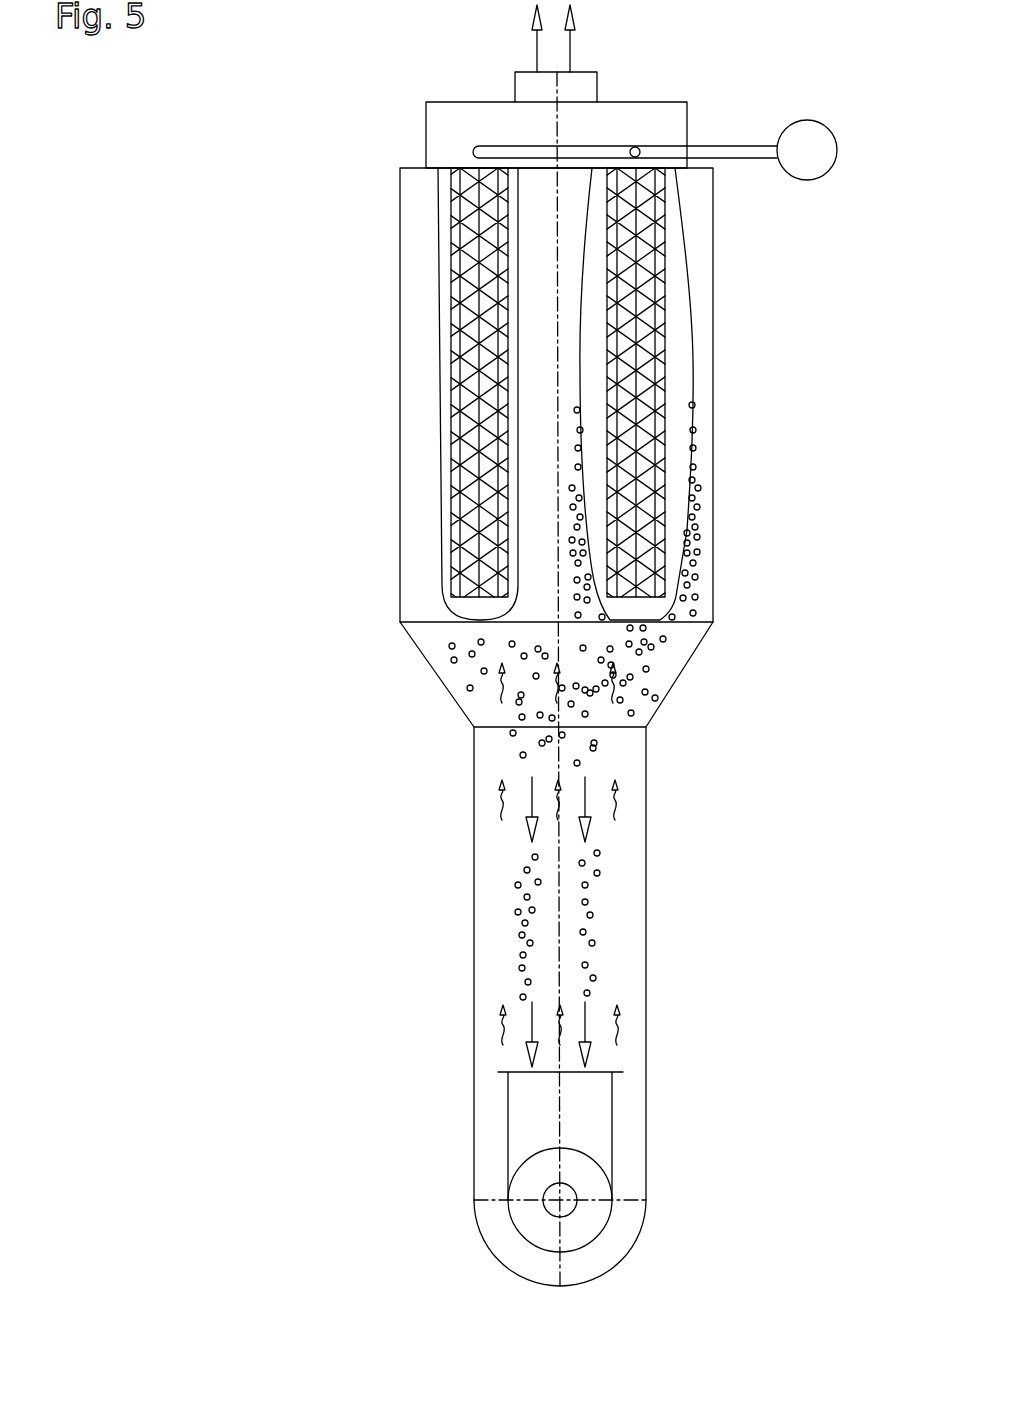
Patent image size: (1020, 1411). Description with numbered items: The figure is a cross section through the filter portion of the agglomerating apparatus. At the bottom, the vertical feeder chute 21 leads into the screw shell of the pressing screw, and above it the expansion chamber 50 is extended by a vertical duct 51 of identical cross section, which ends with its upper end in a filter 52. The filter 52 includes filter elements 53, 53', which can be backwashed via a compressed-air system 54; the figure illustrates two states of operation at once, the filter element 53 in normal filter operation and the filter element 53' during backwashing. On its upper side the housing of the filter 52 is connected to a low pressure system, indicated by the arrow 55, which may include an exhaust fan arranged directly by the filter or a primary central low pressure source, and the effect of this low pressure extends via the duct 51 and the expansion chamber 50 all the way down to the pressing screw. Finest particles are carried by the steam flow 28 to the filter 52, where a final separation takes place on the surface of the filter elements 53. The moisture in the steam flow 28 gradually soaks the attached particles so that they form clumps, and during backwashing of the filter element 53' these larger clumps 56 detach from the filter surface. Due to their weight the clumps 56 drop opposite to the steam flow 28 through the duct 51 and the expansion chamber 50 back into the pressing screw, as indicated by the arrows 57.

The arrow indicating low pressure system 55 is at (571, 52).
The compressed-air system 54 is at (807, 180).
The filter element 53 is at (410, 394).
The filter element 53' is at (705, 394).
The filter 52 is at (403, 518).
The clumps 56 is at (697, 565).
The steam flow 28 is at (500, 690).
The arrows 57 is at (612, 800).
The vertical duct 51 is at (646, 855).
The expansion chamber 50 is at (493, 1108).
The vertical feeder chute 21 is at (612, 1132).